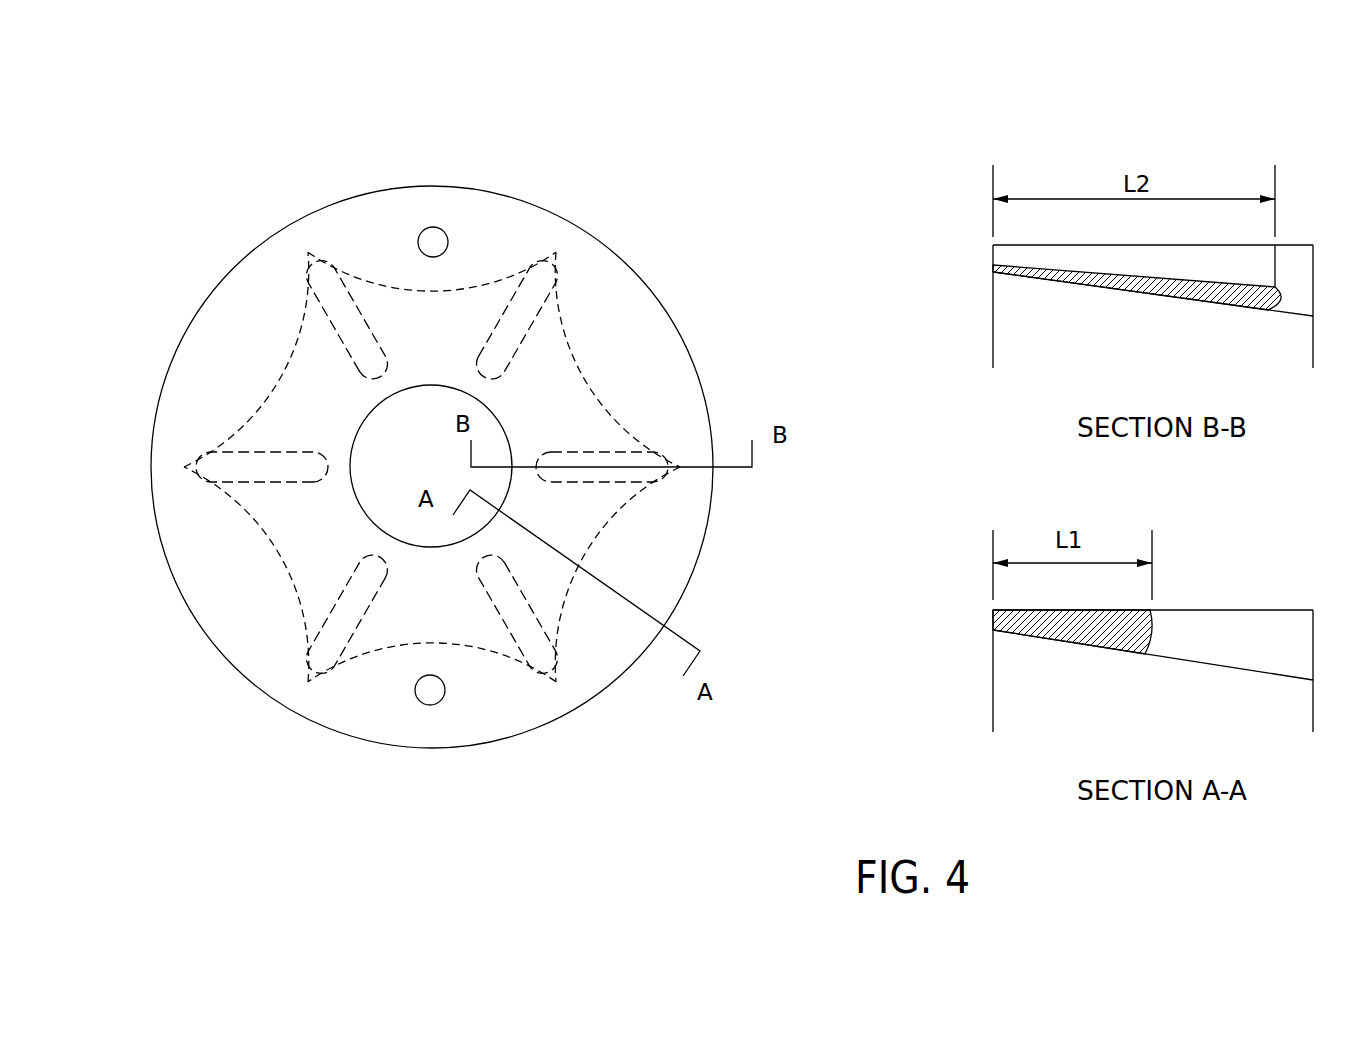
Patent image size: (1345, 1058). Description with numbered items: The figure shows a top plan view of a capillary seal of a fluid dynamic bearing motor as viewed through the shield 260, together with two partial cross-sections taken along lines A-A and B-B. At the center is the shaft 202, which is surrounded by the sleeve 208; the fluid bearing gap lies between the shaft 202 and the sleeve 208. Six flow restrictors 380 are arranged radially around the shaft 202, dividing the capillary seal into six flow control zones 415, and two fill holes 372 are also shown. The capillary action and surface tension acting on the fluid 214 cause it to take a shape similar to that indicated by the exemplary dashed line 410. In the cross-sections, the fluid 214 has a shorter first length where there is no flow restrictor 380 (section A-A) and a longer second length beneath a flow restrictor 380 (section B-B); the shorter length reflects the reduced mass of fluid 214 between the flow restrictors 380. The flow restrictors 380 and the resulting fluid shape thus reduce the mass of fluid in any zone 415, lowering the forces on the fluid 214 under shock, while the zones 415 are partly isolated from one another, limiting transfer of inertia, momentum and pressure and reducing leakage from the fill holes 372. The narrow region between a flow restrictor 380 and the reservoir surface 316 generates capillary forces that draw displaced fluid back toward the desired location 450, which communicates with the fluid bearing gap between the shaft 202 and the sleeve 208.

The shaft 202 is at (422, 476).
The sleeve 208 is at (652, 572).
The fluid 214 is at (307, 403).
The shield 260 is at (172, 578).
The reservoir surface 316 is at (566, 171).
The fill holes 372 is at (440, 229).
The flow restrictors 380 is at (310, 252).
The dashed line 410 is at (297, 350).
The flow control zones 415 is at (556, 405).
The desired location 450 is at (357, 537).